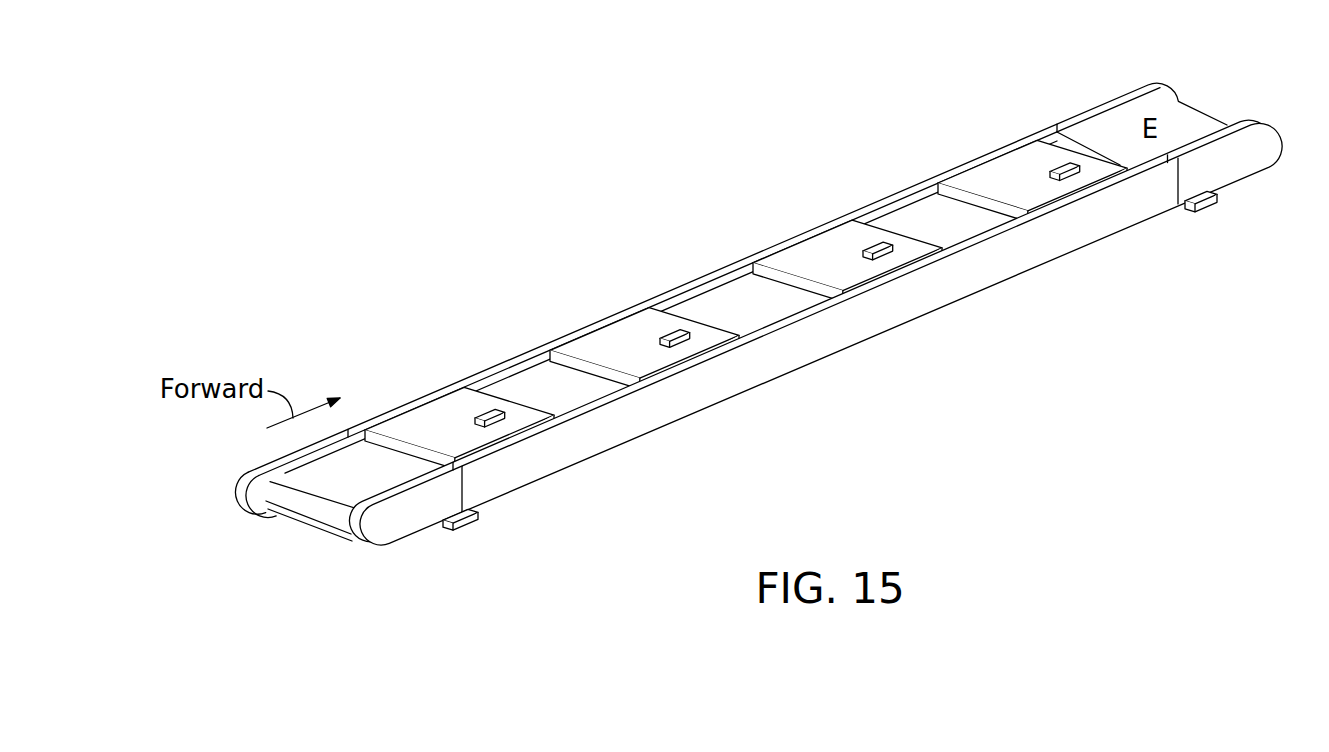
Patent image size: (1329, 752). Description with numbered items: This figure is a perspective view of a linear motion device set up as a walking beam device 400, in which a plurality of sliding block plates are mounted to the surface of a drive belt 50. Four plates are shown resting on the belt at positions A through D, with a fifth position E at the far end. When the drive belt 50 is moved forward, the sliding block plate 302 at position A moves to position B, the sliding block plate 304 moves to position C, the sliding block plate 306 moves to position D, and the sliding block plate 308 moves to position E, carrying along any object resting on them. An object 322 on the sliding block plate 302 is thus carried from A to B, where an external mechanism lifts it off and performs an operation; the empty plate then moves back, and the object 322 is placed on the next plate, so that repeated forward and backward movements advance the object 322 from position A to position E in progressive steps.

The drive belt 50 is at (1217, 97).
The sliding block plate 302 is at (448, 402).
The sliding block plate 304 is at (612, 333).
The sliding block plate 306 is at (803, 248).
The sliding block plate 308 is at (988, 172).
The object 322 is at (500, 426).
The walking beam device 400 is at (835, 358).